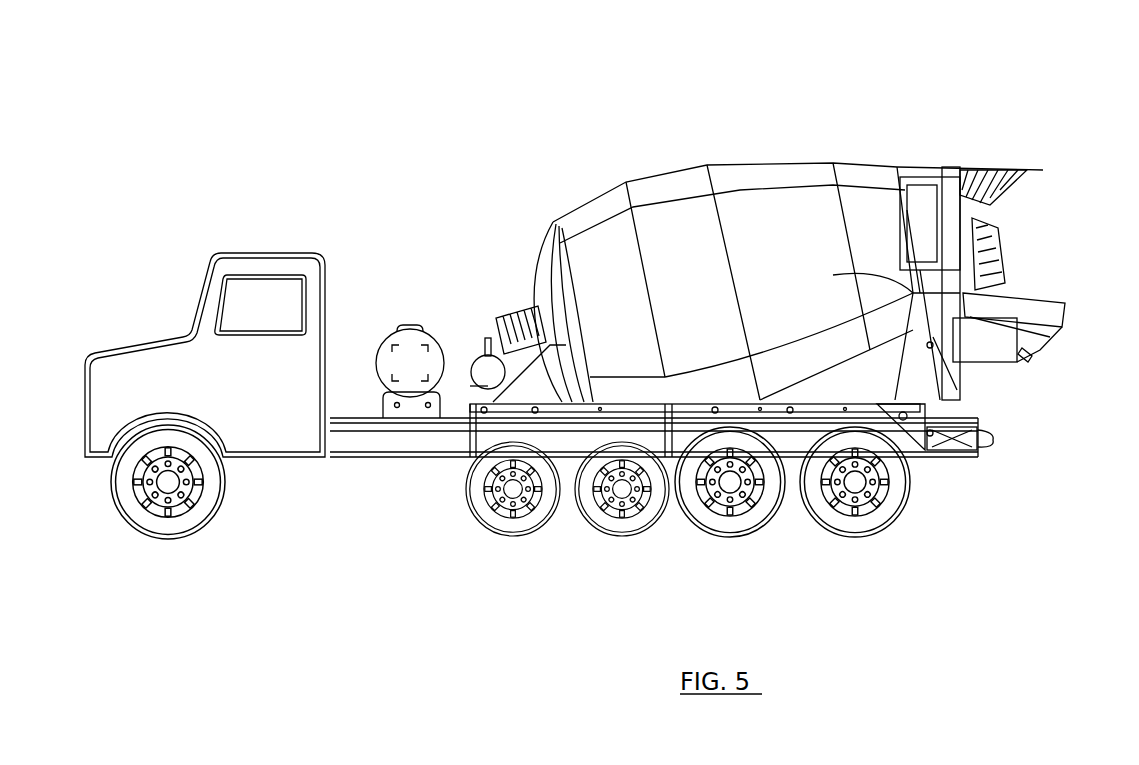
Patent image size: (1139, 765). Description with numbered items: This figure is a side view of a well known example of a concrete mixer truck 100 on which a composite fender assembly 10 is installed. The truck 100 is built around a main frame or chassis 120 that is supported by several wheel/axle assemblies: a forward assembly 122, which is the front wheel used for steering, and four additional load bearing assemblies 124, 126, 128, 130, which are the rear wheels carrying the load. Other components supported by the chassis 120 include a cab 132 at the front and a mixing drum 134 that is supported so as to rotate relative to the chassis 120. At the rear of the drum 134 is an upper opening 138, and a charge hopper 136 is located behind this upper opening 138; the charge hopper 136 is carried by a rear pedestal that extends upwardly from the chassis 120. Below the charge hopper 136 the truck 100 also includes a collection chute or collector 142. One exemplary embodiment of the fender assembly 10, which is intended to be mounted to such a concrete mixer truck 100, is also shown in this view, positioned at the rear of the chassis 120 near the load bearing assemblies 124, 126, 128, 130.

The concrete mixer truck 100 is at (366, 90).
The fender assembly 10 is at (934, 461).
The main frame or chassis 120 is at (385, 445).
The forward assembly 122 is at (173, 525).
The load bearing assembly 124 is at (513, 525).
The load bearing assembly 126 is at (622, 525).
The load bearing assembly 128 is at (730, 535).
The load bearing assembly 130 is at (855, 527).
The cab 132 is at (152, 364).
The mixing drum 134 is at (772, 175).
The charge hopper 136 is at (1020, 180).
The upper opening 138 is at (1010, 212).
The collection chute or collector 142 is at (1005, 285).